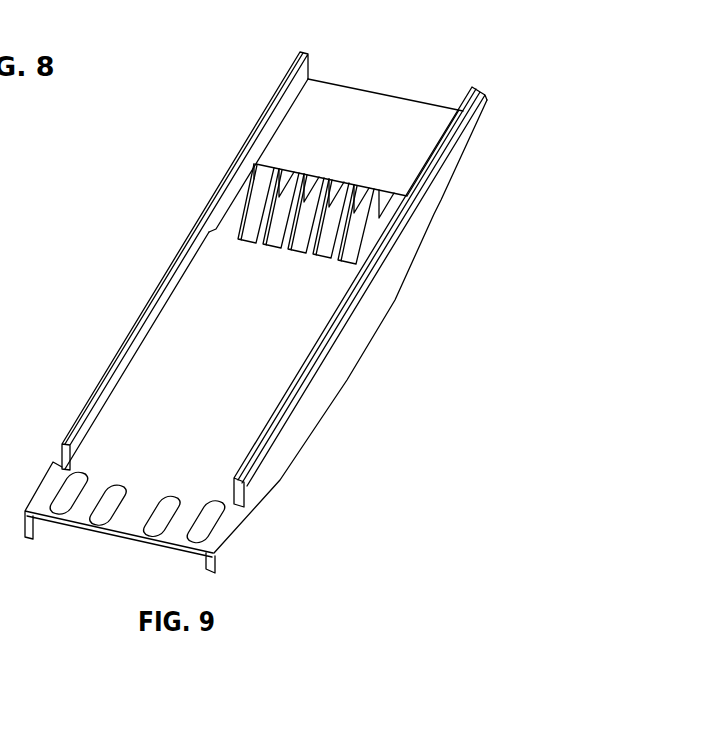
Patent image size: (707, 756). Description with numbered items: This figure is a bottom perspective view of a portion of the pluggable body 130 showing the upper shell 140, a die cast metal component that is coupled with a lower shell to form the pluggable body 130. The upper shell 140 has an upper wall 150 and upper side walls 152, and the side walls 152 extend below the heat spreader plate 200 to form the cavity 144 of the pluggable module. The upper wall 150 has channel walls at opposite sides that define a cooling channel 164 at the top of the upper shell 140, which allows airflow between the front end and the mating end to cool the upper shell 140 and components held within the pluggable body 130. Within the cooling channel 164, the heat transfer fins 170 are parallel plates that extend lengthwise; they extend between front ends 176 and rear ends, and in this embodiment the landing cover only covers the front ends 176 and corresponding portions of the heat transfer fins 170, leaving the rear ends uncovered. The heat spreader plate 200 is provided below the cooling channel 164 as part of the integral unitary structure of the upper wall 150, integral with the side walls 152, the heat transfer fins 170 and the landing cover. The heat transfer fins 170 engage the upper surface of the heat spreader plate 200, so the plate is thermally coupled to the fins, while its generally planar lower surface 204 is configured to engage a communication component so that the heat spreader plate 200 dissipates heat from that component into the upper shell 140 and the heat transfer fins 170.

The pluggable body 130 is at (474, 50).
The upper shell 140 is at (125, 280).
The cavity 144 is at (200, 283).
The upper wall 150 is at (223, 440).
The upper side walls 152 is at (100, 374).
The cooling channel 164 is at (243, 208).
The heat transfer fins 170 is at (316, 188).
The front ends 176 is at (354, 200).
The heat spreader plate 200 is at (172, 364).
The lower surface 204 is at (263, 368).